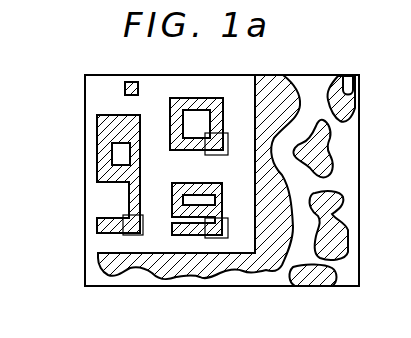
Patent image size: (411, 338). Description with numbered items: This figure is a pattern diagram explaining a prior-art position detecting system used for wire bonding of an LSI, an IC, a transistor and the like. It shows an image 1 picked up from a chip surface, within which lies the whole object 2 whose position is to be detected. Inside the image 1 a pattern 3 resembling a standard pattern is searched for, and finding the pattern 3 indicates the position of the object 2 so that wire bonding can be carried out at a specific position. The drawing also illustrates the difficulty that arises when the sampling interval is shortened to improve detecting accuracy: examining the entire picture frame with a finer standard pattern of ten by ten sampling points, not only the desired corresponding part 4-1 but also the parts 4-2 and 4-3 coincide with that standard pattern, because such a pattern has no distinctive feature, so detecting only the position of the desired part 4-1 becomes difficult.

The image 1 is at (360, 131).
The object 2 is at (93, 105).
The pattern 3 is at (177, 182).
The corresponding part 4-1 is at (229, 218).
The part coincident with standard pattern 4-2 is at (229, 133).
The part coincident with standard pattern 4-3 is at (128, 237).